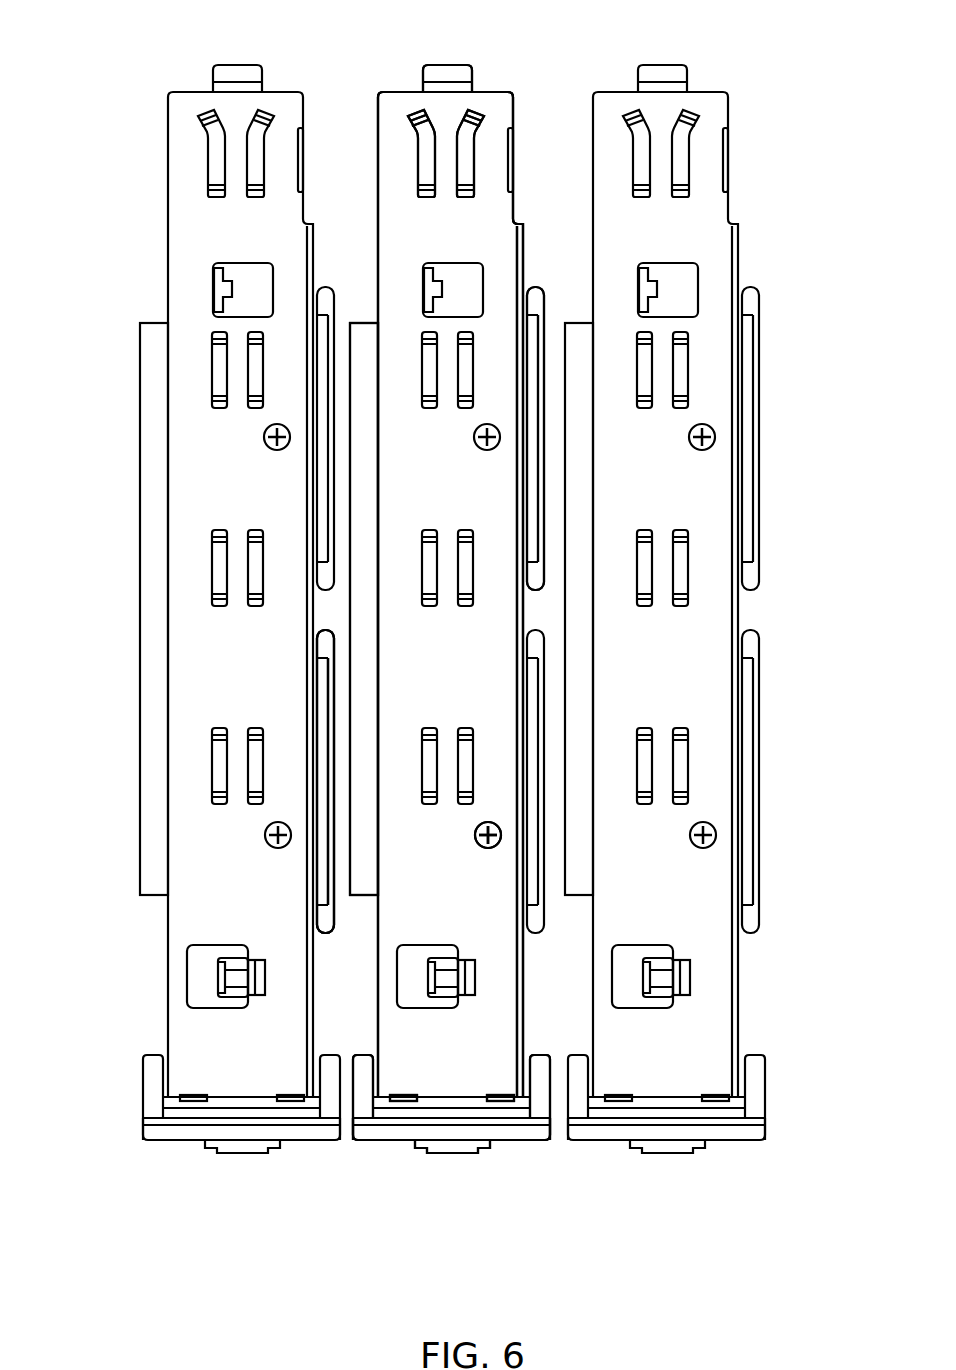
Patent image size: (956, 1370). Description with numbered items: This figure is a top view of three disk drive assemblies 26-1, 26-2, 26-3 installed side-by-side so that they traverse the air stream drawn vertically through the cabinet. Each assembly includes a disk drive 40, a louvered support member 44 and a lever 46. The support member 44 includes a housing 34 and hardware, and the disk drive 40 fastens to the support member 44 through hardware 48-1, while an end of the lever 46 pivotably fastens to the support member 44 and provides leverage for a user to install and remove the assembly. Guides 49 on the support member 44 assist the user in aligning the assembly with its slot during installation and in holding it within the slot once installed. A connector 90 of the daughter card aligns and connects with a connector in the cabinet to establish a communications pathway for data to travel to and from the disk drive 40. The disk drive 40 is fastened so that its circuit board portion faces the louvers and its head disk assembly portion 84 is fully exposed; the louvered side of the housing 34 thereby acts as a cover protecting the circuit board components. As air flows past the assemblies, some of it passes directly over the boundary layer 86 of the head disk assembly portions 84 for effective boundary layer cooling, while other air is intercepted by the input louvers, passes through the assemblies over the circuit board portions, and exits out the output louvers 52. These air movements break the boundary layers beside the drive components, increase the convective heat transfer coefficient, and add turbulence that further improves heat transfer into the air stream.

The disk drive assembly 26-1 is at (237, 1182).
The disk drive assembly 26-2 is at (435, 1182).
The disk drive assembly 26-3 is at (632, 1182).
The housing 34 is at (470, 503).
The louvered support member 44 is at (388, 128).
The connector 90 is at (470, 69).
The guides 49 is at (470, 135).
The output louvers 52 is at (530, 300).
The head disk assembly portion 84 is at (362, 328).
The boundary layer 86 is at (340, 613).
The disk drive 40 is at (363, 913).
The hardware 48-1 is at (486, 850).
The lever 46 is at (519, 1134).